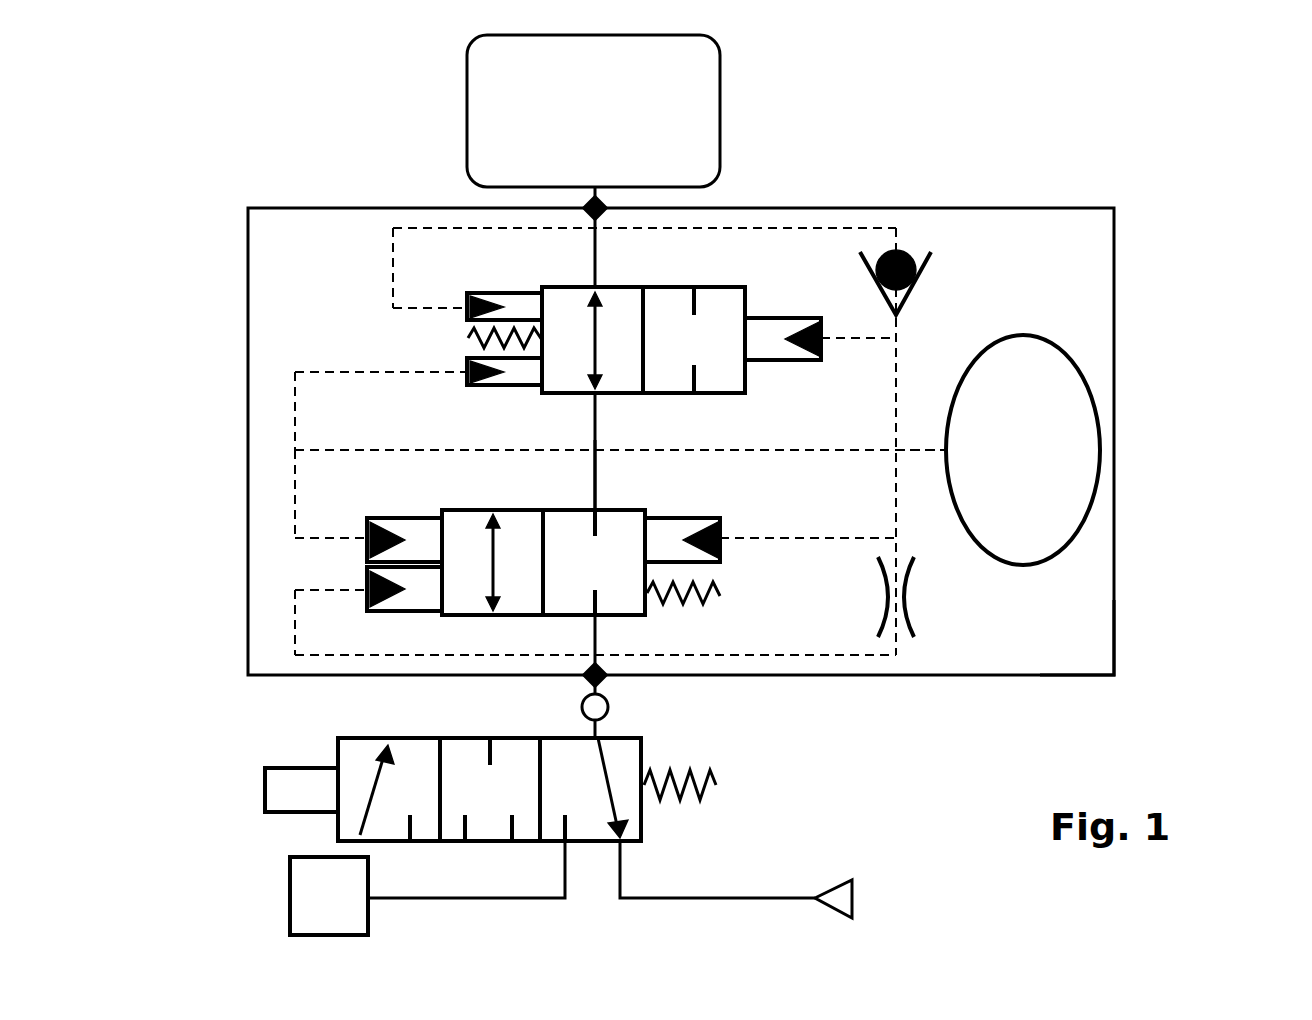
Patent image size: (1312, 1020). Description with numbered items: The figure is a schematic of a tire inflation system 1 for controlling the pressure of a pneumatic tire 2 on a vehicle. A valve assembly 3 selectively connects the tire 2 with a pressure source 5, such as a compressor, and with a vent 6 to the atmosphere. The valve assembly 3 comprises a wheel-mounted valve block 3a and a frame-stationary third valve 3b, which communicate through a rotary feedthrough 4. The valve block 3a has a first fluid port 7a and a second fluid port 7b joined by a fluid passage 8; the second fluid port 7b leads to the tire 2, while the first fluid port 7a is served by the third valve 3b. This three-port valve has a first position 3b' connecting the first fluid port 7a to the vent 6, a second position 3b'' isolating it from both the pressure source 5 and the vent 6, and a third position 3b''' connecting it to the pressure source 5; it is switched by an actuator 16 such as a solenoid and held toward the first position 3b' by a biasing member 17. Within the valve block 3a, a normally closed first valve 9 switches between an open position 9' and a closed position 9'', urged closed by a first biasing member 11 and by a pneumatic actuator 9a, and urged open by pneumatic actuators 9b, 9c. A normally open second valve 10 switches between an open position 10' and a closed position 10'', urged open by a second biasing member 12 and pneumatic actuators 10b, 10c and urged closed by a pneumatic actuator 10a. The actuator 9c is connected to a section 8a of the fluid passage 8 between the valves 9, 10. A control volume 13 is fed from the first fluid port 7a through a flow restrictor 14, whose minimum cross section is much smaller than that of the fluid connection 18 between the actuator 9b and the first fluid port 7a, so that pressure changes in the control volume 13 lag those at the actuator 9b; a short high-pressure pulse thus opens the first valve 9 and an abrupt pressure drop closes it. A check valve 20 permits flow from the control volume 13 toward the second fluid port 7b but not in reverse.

The tire inflation system 1 is at (1100, 96).
The pneumatic tire 2 is at (606, 130).
The valve assembly 3 is at (1195, 292).
The valve block 3a is at (1114, 642).
The third valve 3b is at (379, 742).
The first position 3b' is at (677, 801).
The second position 3b'' is at (513, 809).
The third position 3b''' is at (417, 809).
The rotary feedthrough 4 is at (610, 708).
The pressure source 5 is at (342, 912).
The vent 6 is at (855, 898).
The first fluid port 7a is at (592, 680).
The second fluid port 7b is at (605, 206).
The fluid passage 8 is at (598, 256).
The section of the fluid passage 8a is at (598, 488).
The first valve 9 is at (621, 532).
The open position 9' is at (433, 578).
The closed position 9'' is at (576, 578).
The pneumatic actuator 9a is at (722, 530).
The pneumatic actuator 9b is at (368, 600).
The pneumatic actuator 9c is at (368, 530).
The second valve 10 is at (595, 343).
The open position 10' is at (531, 362).
The closed position 10'' is at (752, 320).
The pneumatic actuator 10a is at (790, 320).
The pneumatic actuator 10b is at (470, 300).
The pneumatic actuator 10c is at (462, 385).
The first biasing member 11 is at (722, 596).
The second biasing member 12 is at (465, 346).
The control volume 13 is at (1038, 465).
The flow restrictor 14 is at (925, 600).
The actuator 16 is at (258, 802).
The biasing member 17 is at (718, 786).
The fluid connection 18 is at (295, 615).
The check valve 20 is at (935, 292).